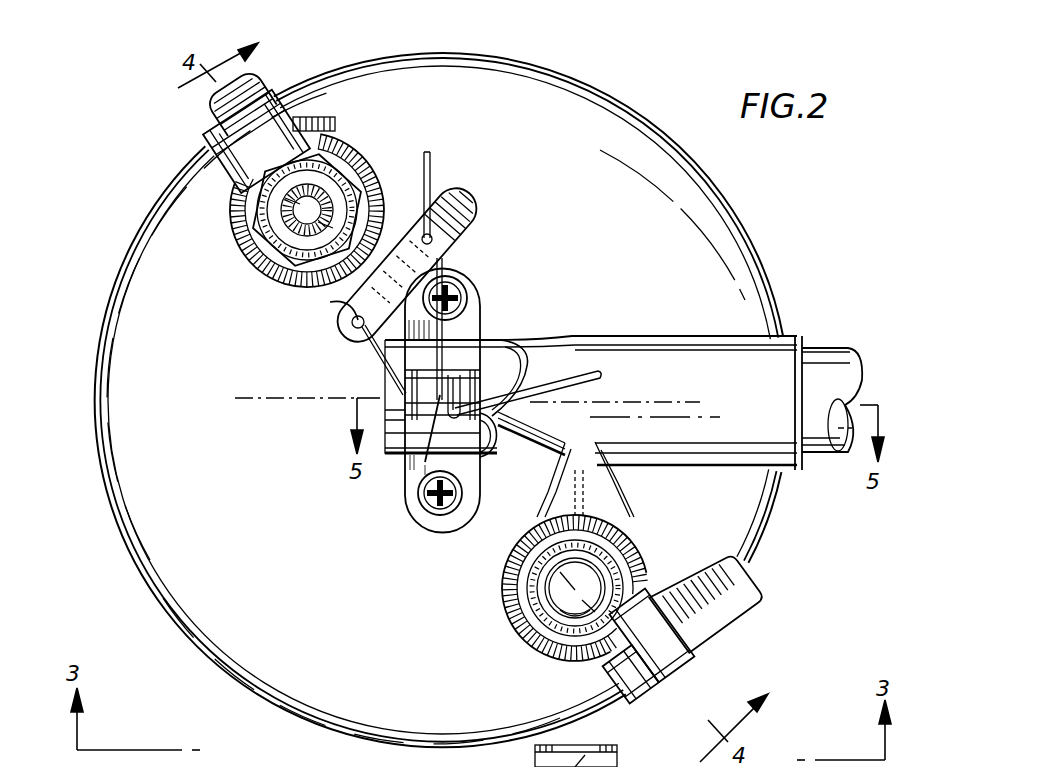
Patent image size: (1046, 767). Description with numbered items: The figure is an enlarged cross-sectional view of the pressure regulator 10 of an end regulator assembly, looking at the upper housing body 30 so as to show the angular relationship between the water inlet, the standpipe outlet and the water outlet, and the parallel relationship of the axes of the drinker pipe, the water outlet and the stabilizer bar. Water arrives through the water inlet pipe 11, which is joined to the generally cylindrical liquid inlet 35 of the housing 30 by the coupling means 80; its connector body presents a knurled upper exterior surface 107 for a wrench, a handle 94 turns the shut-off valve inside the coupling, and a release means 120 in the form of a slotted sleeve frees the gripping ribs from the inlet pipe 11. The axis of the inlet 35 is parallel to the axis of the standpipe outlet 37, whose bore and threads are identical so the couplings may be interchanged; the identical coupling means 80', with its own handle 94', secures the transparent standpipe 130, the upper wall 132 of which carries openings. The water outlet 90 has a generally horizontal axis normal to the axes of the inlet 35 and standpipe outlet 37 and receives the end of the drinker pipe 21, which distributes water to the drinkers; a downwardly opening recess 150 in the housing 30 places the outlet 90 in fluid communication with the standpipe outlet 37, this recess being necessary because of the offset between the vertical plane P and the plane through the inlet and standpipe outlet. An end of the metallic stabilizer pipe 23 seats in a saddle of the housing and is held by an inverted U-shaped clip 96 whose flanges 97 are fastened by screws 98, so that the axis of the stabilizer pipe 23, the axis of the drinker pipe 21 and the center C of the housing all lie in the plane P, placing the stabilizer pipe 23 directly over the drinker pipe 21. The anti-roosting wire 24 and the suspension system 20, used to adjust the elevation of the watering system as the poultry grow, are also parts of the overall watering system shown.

The pressure regulator 10 is at (650, 66).
The upper housing body 30 is at (666, 192).
The handle 94 is at (249, 125).
The releasing means 120 is at (319, 191).
The liquid inlet 35 is at (340, 168).
The upper exterior surface 107 is at (266, 231).
The water inlet pipe 11 is at (284, 250).
The coupling means 80 is at (307, 223).
The suspension system 20 is at (462, 200).
The screws 98 is at (455, 290).
The flanges 97 is at (480, 302).
The inverted U-shaped clip 96 is at (470, 356).
The stabilizer pipe 23 is at (518, 352).
The anti-roosting wire 24 is at (604, 378).
The vertical plane P is at (262, 398).
The center C is at (424, 438).
The water outlet 90 is at (758, 419).
The drinker pipe 21 is at (820, 352).
The recess 150 is at (618, 492).
The standpipe 130 is at (589, 566).
The standpipe outlet 37 is at (625, 560).
The coupling means 80' is at (551, 588).
The handle 94' is at (678, 619).
The upper wall 132 is at (600, 745).